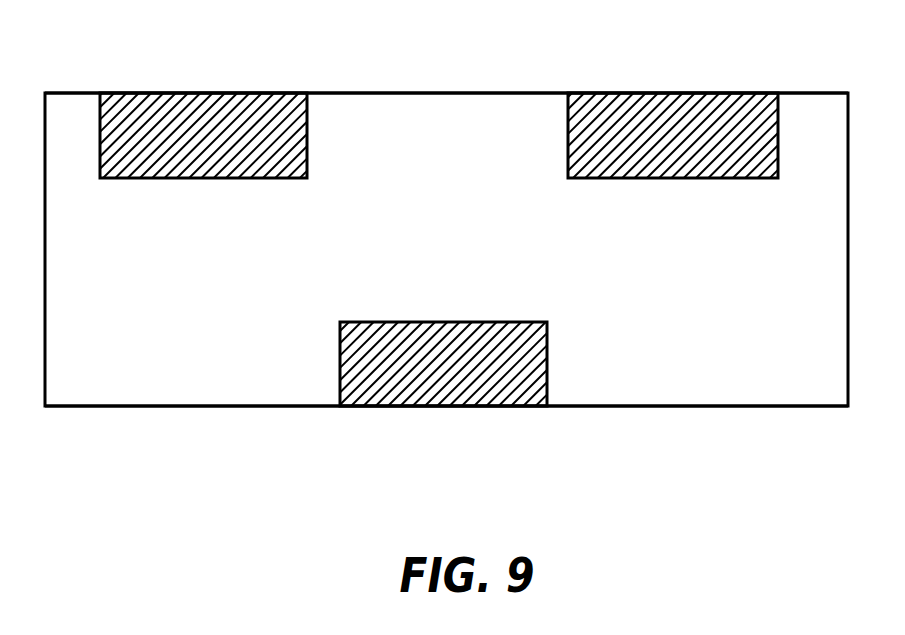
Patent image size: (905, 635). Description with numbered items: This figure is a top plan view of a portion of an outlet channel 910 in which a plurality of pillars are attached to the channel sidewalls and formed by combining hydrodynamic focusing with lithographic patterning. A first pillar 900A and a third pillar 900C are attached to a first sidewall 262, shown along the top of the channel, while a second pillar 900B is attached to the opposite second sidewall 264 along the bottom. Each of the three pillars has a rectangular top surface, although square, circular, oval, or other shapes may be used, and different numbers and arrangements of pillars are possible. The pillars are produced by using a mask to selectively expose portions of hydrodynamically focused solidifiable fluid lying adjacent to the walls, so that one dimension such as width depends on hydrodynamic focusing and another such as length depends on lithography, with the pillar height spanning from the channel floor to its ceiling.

The first sidewall 262 is at (476, 92).
The second sidewall 264 is at (472, 407).
The substrate 910 is at (411, 252).
The first pillar 900A is at (242, 148).
The second pillar 900B is at (401, 377).
The third pillar 900C is at (711, 148).